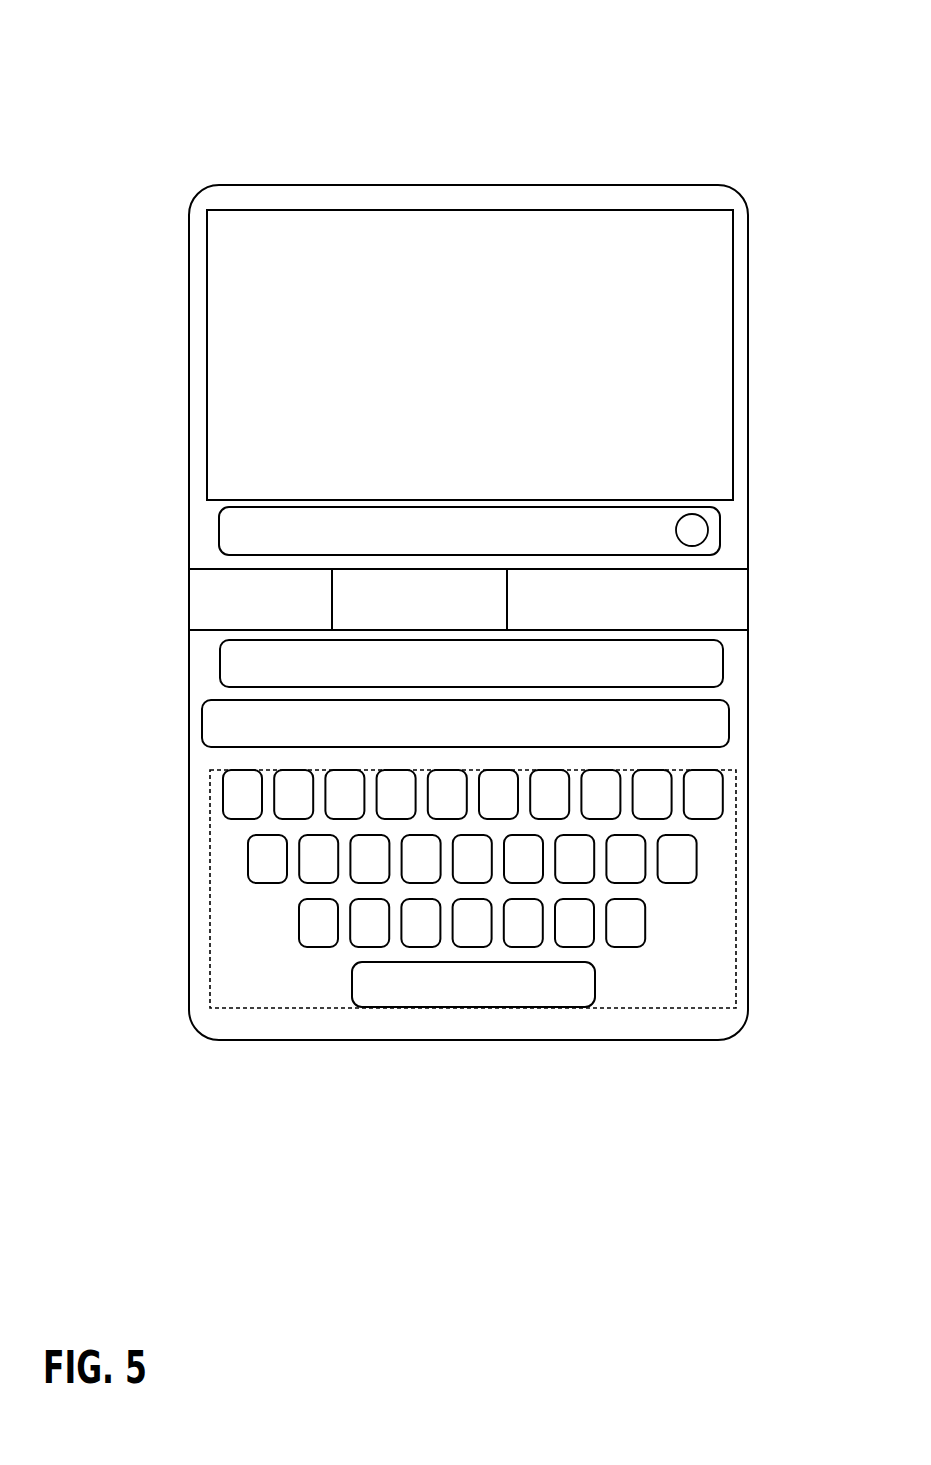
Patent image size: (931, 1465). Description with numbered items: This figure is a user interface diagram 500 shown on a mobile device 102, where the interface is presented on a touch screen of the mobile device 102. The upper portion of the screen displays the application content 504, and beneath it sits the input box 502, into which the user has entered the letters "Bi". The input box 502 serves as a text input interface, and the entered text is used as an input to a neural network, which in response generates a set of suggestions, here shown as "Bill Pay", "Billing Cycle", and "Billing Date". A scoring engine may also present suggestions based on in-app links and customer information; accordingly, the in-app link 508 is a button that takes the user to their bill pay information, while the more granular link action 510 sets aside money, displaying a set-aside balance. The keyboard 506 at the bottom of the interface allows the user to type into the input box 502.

The user interface 500 is at (761, 73).
The mobile device 102 is at (468, 588).
The application content 504 is at (417, 355).
The input box 502 is at (417, 515).
The link action 510 is at (420, 663).
The in-app link 508 is at (414, 723).
The keyboard 506 is at (418, 889).